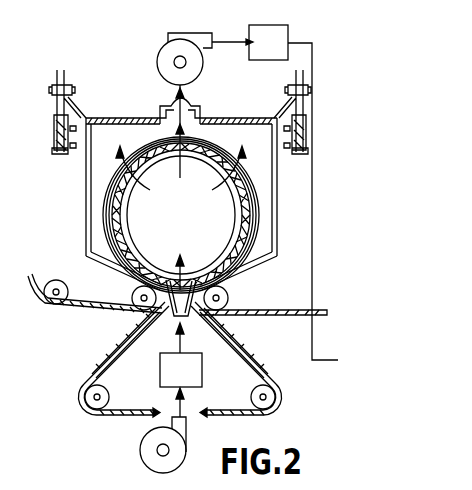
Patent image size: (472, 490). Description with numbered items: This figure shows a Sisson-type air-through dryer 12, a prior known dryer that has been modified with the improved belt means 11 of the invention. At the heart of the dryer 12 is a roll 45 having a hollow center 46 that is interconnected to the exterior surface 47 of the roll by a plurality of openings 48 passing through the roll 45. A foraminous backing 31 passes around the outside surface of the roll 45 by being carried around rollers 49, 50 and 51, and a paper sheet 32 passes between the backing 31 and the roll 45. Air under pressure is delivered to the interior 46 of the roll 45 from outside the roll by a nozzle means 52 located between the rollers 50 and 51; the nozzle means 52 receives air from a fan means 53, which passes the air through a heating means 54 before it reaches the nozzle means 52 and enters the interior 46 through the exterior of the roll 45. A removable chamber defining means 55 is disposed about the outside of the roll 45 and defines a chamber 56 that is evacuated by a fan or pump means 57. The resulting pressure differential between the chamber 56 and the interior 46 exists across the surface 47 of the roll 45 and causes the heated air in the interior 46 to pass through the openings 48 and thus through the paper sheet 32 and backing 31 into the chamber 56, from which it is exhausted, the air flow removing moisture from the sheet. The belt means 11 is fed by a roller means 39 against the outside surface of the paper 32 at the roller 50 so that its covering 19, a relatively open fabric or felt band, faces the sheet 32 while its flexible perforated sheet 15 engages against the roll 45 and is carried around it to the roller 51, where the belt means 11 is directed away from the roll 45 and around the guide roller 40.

The belt means 11 is at (258, 364).
The air-through dryer 12 is at (97, 60).
The flexible perforated sheet 15 is at (108, 369).
The covering band 19 is at (113, 350).
The foraminous backing 31 is at (318, 310).
The paper sheet 32 is at (267, 316).
The roller means 39 is at (84, 397).
The guide roller 40 is at (276, 398).
The roll 45 is at (256, 203).
The hollow center 46 is at (147, 210).
The exterior surface 47 is at (251, 240).
The openings 48 is at (118, 245).
The roller 49 is at (55, 279).
The roller 50 is at (132, 296).
The roller 51 is at (229, 296).
The nozzle means 52 is at (168, 317).
The fan means 53 is at (147, 445).
The heating means 54 is at (201, 376).
The removable chamber defining means 55 is at (125, 118).
The chamber 56 is at (288, 170).
The fan or pump means 57 is at (172, 46).